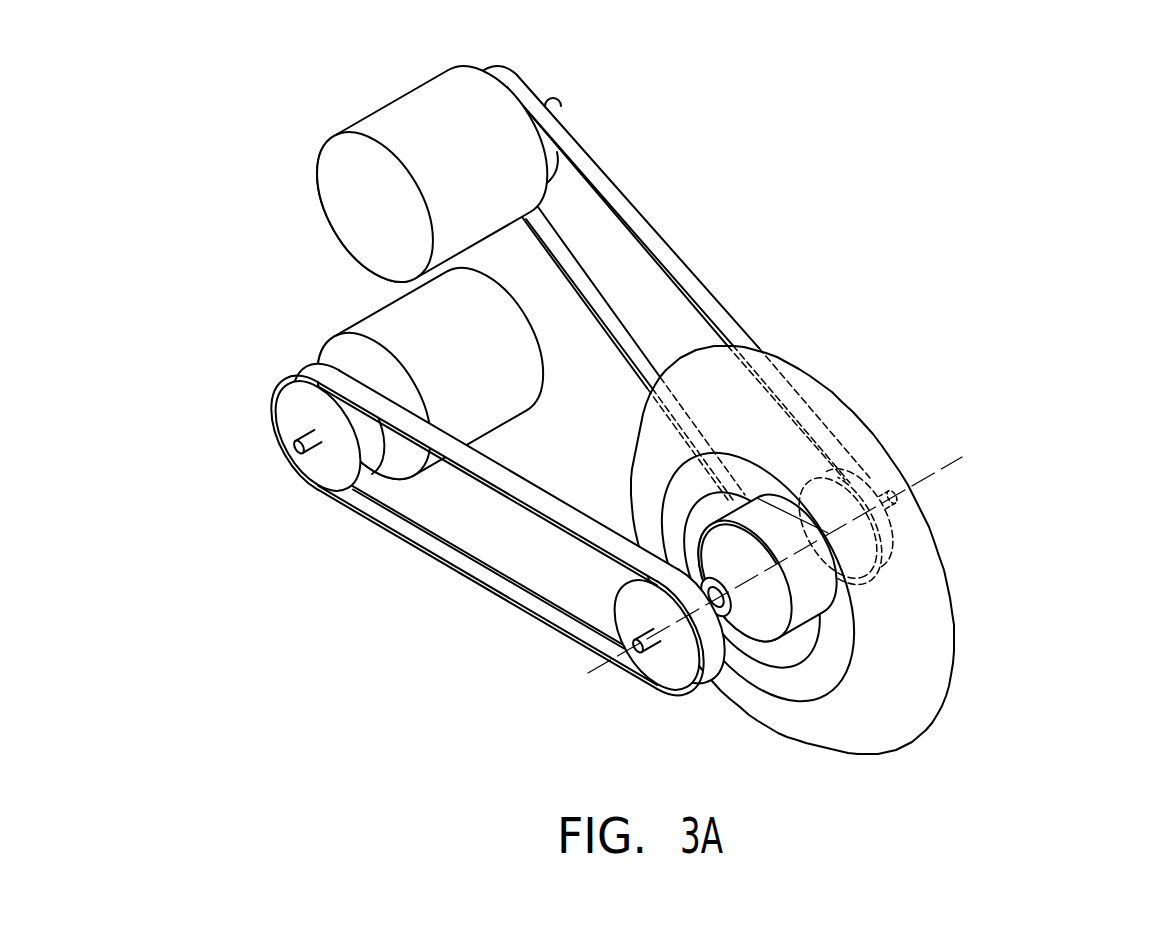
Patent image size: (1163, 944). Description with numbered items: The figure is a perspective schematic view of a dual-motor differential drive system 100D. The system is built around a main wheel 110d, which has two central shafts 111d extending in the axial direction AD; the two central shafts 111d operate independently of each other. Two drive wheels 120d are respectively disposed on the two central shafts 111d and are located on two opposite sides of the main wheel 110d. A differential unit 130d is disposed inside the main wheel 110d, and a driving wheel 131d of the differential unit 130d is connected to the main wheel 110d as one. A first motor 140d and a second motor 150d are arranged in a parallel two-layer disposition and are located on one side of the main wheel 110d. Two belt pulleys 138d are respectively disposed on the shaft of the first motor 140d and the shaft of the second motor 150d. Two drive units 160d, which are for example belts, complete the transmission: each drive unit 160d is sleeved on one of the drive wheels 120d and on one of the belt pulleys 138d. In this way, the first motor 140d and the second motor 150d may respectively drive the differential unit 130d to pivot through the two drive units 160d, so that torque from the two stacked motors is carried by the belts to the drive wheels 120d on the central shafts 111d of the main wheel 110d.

The dual-motor differential drive system 100D is at (663, 423).
The main wheel 110d is at (820, 402).
The central shaft 111d is at (635, 640).
The drive wheel 120d is at (667, 665).
The differential unit 130d is at (757, 610).
The driving wheel 131d is at (808, 602).
The belt pulley 138d is at (290, 420).
The first motor 140d is at (410, 108).
The second motor 150d is at (500, 405).
The drive unit 160d is at (652, 237).
The axial direction AD is at (804, 547).